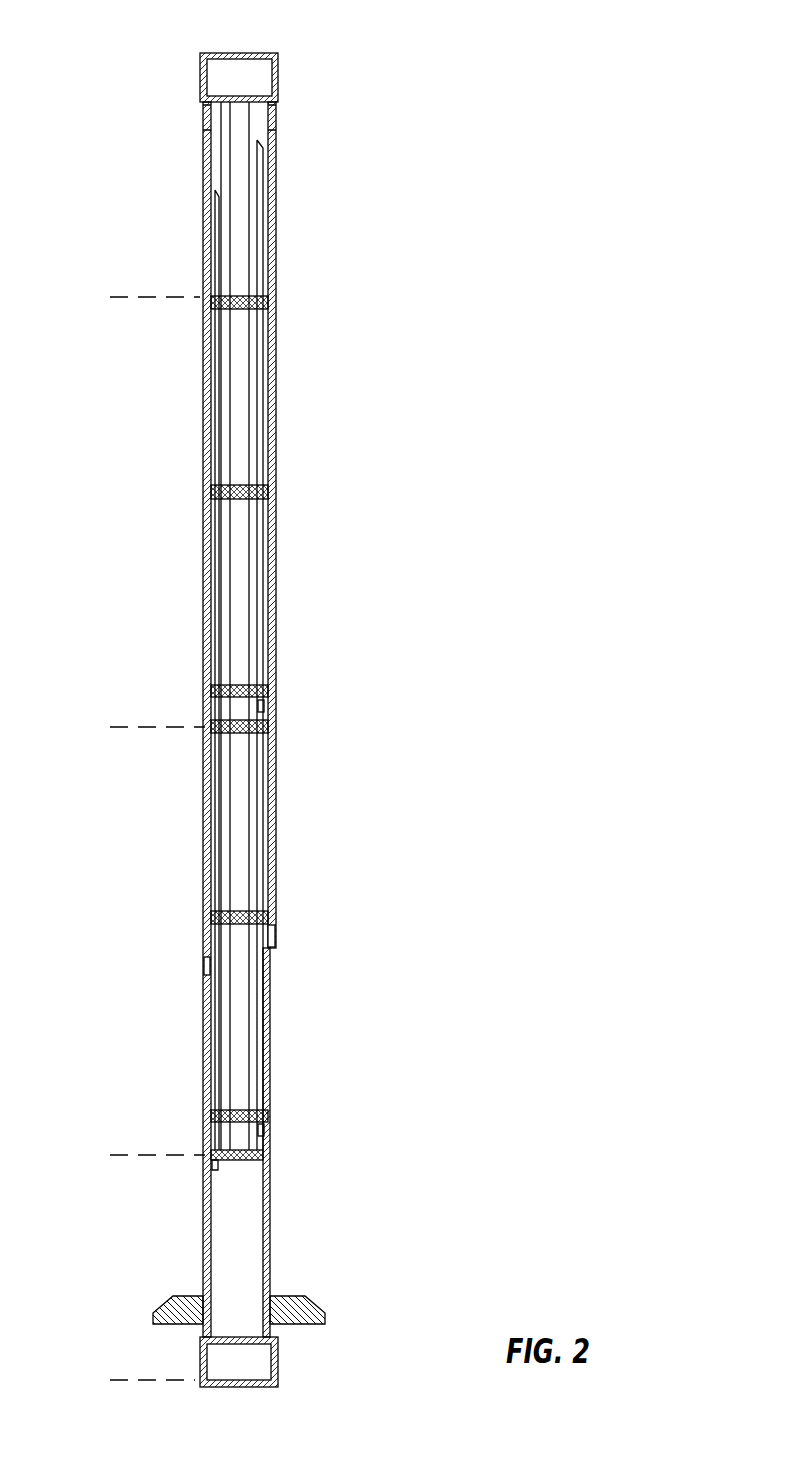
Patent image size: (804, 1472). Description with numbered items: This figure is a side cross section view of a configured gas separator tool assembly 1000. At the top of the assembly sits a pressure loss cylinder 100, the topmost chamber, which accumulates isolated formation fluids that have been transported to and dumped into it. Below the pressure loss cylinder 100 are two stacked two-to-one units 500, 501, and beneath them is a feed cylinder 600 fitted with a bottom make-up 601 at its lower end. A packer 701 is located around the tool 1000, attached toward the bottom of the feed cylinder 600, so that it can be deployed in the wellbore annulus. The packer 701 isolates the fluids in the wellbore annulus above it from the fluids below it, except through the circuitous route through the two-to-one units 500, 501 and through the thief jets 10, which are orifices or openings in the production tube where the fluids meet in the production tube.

The gas separator tool assembly 1000 is at (333, 63).
The pressure loss cylinder 100 is at (181, 177).
The 2-1 unit 500 is at (108, 297).
The 2-1 unit 501 is at (108, 727).
The feed cylinder 600 is at (108, 1155).
The thief jet 10 is at (238, 710).
The packer 701 is at (287, 1296).
The bottom make-up 601 is at (261, 1357).